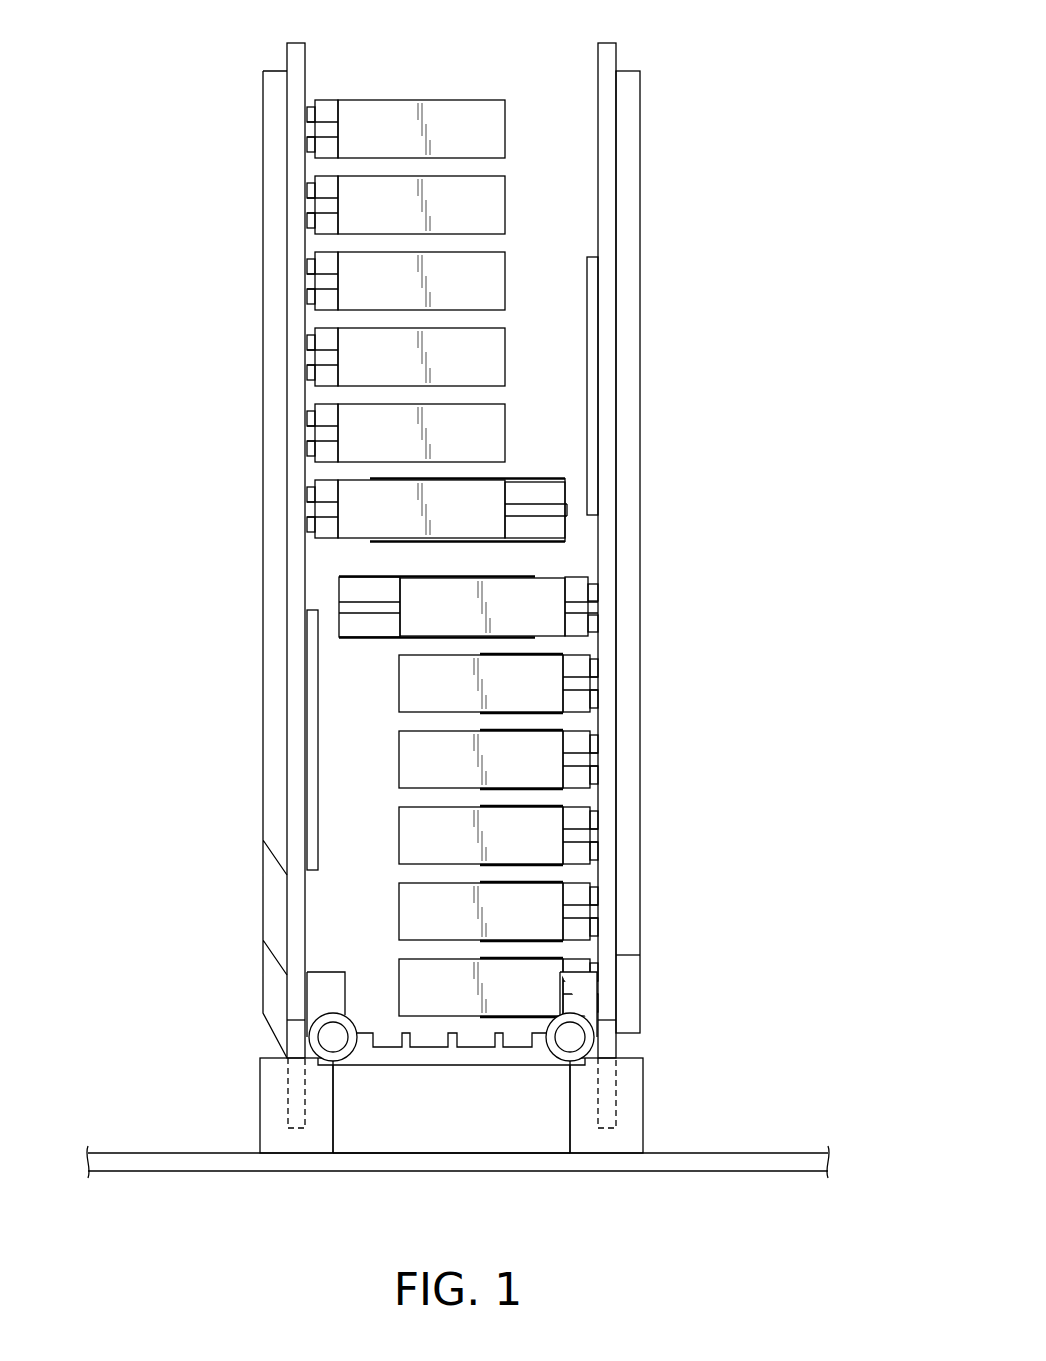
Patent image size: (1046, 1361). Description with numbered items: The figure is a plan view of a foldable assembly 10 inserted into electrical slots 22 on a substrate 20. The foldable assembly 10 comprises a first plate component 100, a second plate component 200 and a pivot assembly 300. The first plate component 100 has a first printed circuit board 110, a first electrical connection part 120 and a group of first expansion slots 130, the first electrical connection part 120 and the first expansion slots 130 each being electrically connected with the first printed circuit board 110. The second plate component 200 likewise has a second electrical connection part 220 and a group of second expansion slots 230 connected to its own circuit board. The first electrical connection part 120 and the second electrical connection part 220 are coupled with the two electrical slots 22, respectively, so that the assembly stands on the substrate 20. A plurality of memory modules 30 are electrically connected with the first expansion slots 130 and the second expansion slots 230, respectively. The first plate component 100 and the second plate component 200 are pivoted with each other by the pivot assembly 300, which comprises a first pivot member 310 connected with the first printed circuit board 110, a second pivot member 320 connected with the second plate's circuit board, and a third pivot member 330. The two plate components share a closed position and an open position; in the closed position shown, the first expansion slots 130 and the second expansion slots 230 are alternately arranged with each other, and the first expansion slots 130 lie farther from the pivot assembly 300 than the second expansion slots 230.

The foldable assembly 10 is at (458, 619).
The substrate 20 is at (788, 1163).
The electrical slot 22 is at (275, 1117).
The memory module 30 is at (537, 492).
The first plate component 100 is at (318, 565).
The first printed circuit board 110 is at (272, 565).
The first electrical connection part 120 is at (298, 1092).
The first expansion slot 130 is at (461, 126).
The second plate component 200 is at (545, 585).
The second electrical connection part 220 is at (606, 1083).
The second expansion slot 230 is at (430, 682).
The pivot assembly 300 is at (518, 1066).
The first pivot member 310 is at (325, 990).
The second pivot member 320 is at (580, 998).
The third pivot member 330 is at (426, 1053).